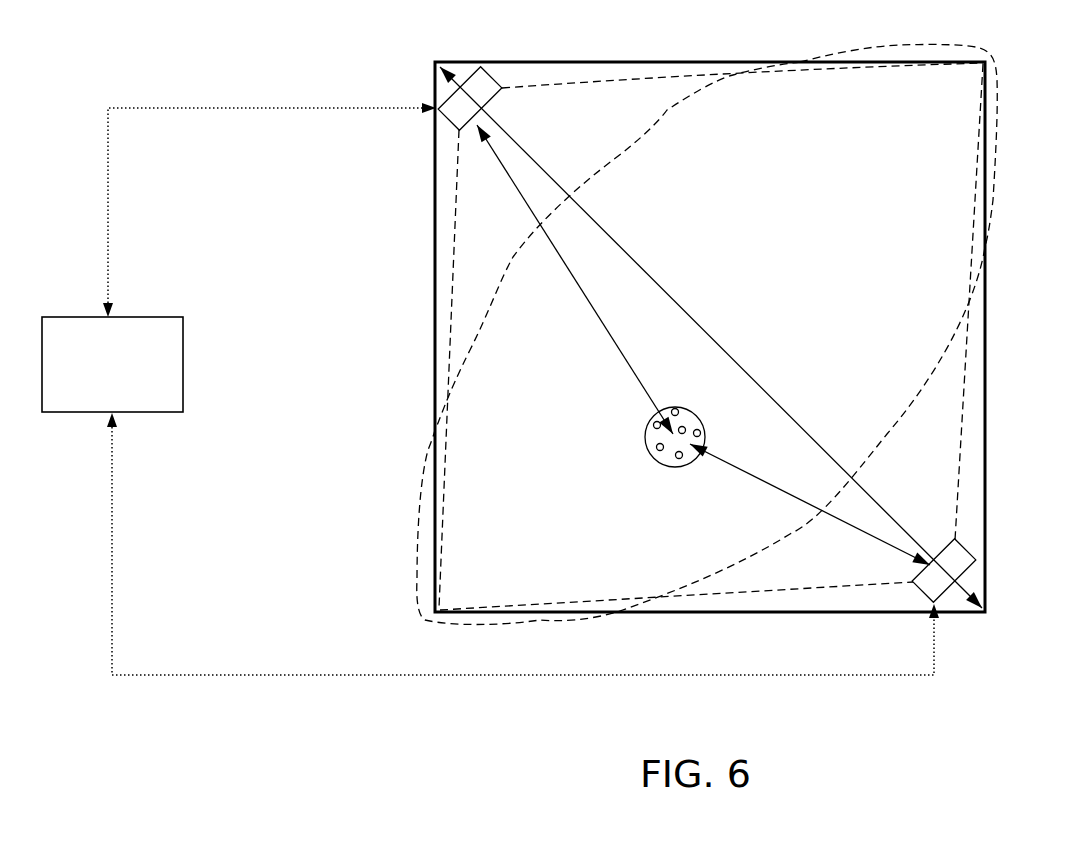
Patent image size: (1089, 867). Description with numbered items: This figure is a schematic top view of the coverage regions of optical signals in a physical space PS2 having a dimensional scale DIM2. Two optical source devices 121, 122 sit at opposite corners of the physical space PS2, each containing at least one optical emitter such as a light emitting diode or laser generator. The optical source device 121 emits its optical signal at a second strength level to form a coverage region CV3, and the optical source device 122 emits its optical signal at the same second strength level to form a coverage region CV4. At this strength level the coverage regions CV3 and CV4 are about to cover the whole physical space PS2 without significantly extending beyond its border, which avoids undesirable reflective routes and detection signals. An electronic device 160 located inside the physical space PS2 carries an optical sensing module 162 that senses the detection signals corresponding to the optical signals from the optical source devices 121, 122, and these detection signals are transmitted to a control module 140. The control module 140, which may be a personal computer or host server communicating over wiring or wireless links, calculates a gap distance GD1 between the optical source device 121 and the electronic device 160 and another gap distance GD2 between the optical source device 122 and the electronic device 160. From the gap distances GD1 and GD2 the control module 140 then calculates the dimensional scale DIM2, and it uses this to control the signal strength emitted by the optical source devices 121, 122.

The optical source device 121 is at (492, 73).
The optical source device 122 is at (966, 549).
The control module 140 is at (167, 317).
The electronic device 160 is at (646, 428).
The optical sensing module 162 is at (686, 429).
The physical space PS2 is at (987, 505).
The coverage region CV3 is at (733, 32).
The coverage region CV4 is at (783, 592).
The gap distance GD1 is at (567, 272).
The gap distance GD2 is at (747, 475).
The dimensional scale DIM2 is at (770, 398).